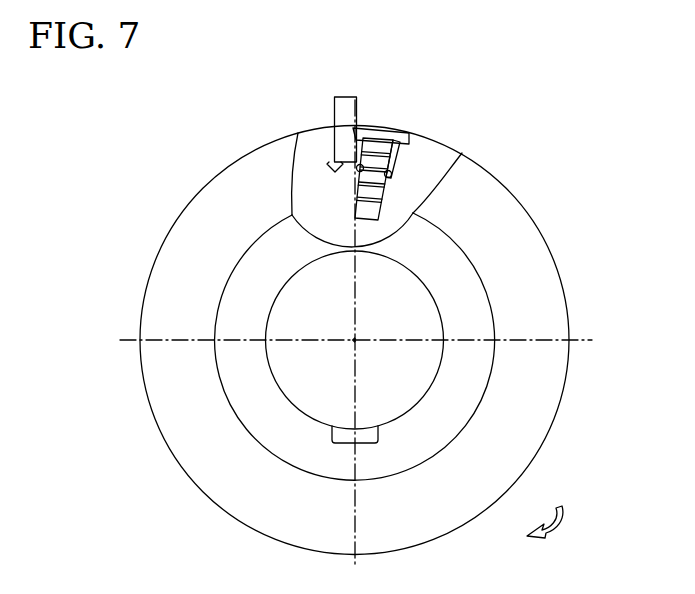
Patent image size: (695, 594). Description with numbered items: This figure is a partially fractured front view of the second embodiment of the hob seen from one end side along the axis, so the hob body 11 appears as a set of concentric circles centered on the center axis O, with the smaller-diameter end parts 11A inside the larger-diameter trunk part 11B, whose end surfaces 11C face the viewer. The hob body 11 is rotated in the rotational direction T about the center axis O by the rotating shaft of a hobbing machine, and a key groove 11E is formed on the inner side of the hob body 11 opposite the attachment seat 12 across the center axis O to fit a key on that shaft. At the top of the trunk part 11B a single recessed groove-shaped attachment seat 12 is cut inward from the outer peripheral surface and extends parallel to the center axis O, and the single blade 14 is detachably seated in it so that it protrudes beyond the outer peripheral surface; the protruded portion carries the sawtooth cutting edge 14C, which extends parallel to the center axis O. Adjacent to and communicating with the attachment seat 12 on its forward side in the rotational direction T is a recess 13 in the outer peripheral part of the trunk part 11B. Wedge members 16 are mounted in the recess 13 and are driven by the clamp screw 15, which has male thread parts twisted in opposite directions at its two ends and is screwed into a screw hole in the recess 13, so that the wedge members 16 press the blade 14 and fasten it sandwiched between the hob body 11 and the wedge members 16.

The hob body 11 is at (203, 135).
The end parts 11A is at (477, 315).
The trunk part 11B is at (572, 362).
The end surfaces 11C is at (527, 232).
The key groove 11E is at (345, 433).
The attachment seat 12 is at (329, 147).
The recess 13 is at (404, 166).
The blade 14 is at (335, 92).
The cutting edge 14C is at (357, 125).
The clamp screw 15 is at (390, 147).
The wedge members 16 is at (380, 143).
The center axis O is at (357, 345).
The rotational direction T is at (545, 531).